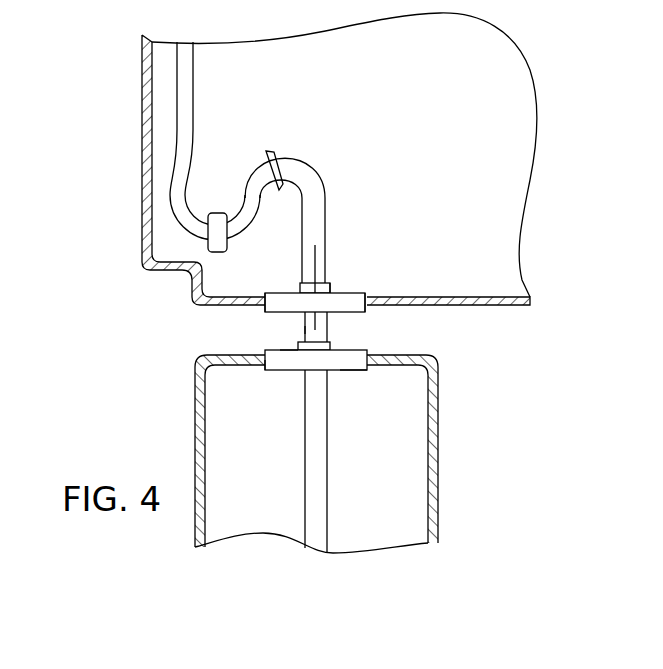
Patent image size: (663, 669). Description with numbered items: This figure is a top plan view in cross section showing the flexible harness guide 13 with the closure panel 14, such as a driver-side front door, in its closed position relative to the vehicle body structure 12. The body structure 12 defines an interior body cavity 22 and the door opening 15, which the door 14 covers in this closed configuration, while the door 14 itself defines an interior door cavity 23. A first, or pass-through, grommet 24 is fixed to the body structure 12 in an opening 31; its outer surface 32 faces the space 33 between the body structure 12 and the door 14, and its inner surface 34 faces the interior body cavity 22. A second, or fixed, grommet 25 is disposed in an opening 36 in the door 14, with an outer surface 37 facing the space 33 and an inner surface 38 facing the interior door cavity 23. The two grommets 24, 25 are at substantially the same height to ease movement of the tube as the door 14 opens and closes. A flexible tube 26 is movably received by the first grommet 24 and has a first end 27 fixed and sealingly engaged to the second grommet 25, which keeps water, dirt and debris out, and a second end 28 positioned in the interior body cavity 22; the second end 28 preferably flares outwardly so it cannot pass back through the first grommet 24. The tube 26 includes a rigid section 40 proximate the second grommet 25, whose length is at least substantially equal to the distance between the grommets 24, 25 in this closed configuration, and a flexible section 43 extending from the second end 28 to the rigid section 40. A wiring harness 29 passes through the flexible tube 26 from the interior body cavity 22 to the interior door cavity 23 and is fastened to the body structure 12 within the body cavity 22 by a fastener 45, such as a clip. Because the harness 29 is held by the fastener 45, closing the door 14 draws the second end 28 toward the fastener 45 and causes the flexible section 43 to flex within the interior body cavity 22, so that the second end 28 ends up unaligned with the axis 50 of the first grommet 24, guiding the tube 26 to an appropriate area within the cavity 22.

The vehicle body structure 12 is at (518, 305).
The flexible harness guide 13 is at (378, 174).
The closure panel 14 is at (440, 499).
The opening 15 is at (478, 306).
The interior body cavity 22 is at (469, 164).
The interior door cavity 23 is at (383, 491).
The first grommet 24 is at (348, 291).
The second grommet 25 is at (361, 346).
The flexible tube 26 is at (328, 323).
The first end 27 is at (304, 328).
The second end 28 is at (269, 152).
The wiring harness 29 is at (195, 115).
The opening 31 is at (366, 293).
The outer surface 32 is at (268, 312).
The space 33 is at (430, 334).
The inner surface 34 is at (338, 285).
The opening 36 is at (282, 370).
The outer surface 37 is at (288, 349).
The inner surface 38 is at (346, 372).
The rigid section 40 is at (327, 209).
The flexible section 43 is at (309, 163).
The fastener 45 is at (218, 222).
The axis 50 is at (312, 262).